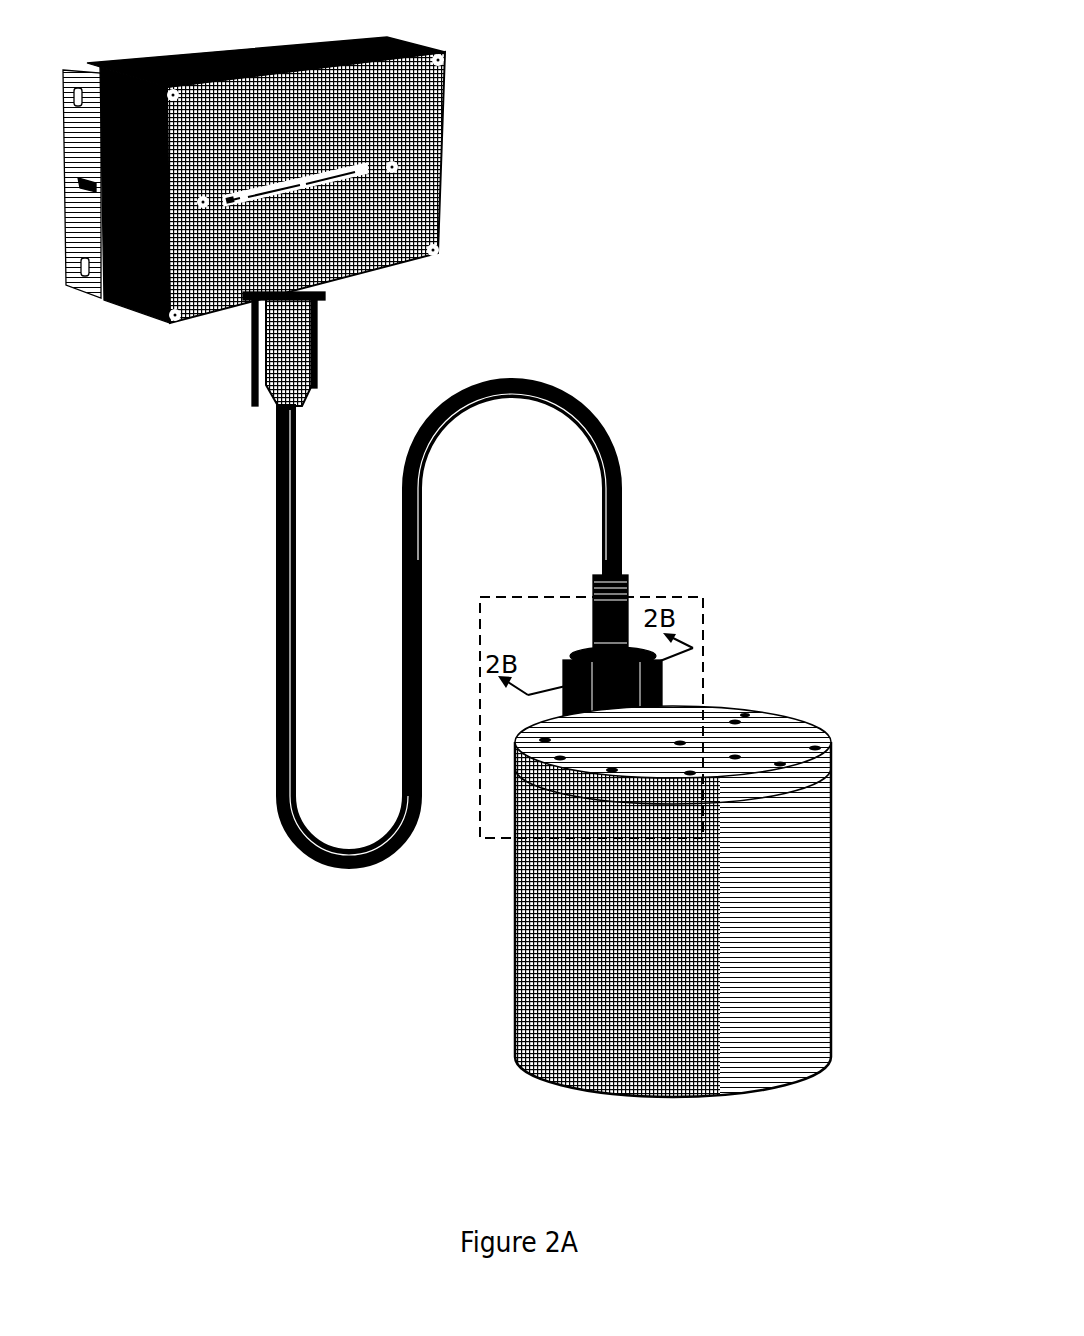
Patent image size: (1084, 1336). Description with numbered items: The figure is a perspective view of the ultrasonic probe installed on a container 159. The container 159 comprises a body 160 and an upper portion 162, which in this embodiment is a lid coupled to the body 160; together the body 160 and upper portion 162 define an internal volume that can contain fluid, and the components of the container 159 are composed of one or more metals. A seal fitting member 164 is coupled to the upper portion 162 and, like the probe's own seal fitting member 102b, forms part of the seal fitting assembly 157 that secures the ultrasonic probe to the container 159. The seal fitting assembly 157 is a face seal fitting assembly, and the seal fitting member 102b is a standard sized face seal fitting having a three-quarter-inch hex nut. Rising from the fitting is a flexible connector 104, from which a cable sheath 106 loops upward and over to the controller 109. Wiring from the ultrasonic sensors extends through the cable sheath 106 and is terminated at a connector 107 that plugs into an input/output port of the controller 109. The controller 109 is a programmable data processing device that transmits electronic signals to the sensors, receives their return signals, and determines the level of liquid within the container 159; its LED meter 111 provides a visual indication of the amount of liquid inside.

The controller 109 is at (408, 77).
The LED meter 111 is at (327, 173).
The connector 107 is at (303, 348).
The cable sheath 106 is at (608, 458).
The flexible connector 104 is at (622, 627).
The seal fitting assembly 157 is at (707, 661).
The seal fitting member 102b is at (638, 692).
The seal fitting member 164 is at (645, 735).
The container 159 is at (726, 864).
The upper portion 162 is at (785, 742).
The body 160 is at (807, 917).